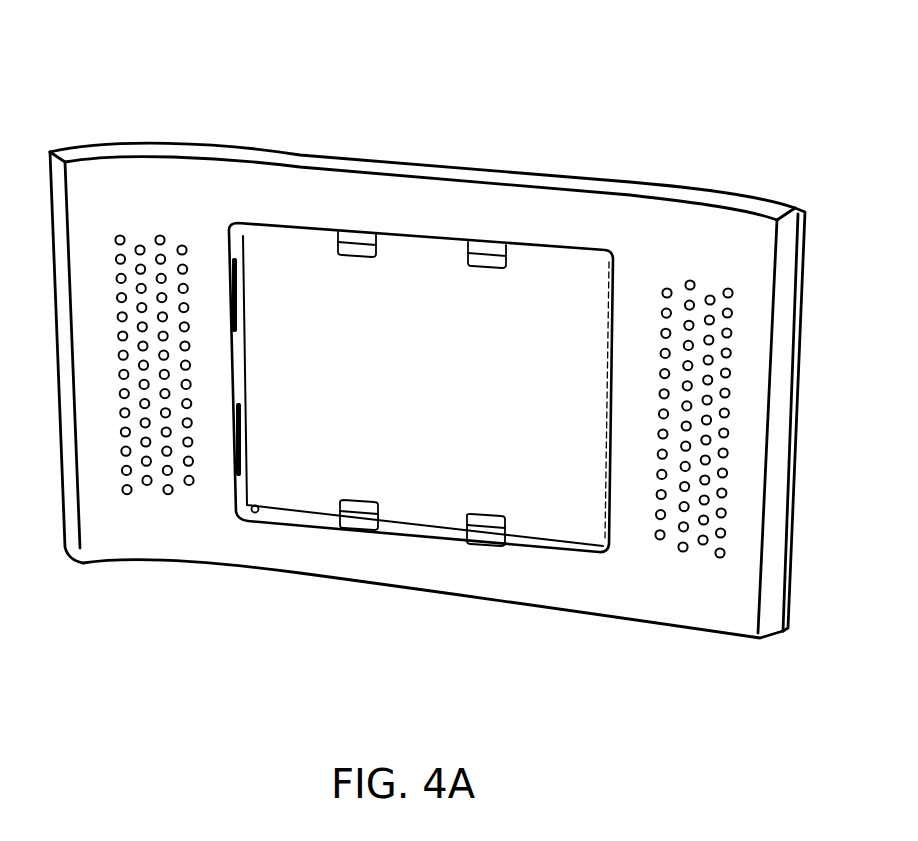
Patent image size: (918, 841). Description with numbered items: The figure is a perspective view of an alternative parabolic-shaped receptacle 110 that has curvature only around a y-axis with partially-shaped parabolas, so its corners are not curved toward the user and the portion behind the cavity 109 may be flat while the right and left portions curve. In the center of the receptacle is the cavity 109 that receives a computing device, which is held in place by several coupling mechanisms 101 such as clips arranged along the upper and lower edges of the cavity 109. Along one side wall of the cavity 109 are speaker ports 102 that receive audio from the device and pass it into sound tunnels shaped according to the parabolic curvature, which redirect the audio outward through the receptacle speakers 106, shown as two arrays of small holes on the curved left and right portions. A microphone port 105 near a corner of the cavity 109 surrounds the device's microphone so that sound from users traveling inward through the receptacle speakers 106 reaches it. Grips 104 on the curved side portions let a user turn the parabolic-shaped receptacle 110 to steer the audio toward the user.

The parabolic-shaped receptacle 110 is at (419, 381).
The coupling mechanisms 101 is at (490, 250).
The speaker ports 102 is at (238, 288).
The grips 104 is at (57, 265).
The microphone port 105 is at (276, 514).
The receptacle speakers 106 is at (148, 486).
The cavity 109 is at (292, 267).